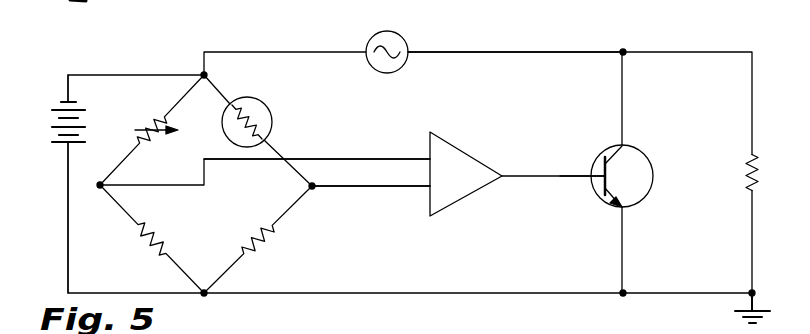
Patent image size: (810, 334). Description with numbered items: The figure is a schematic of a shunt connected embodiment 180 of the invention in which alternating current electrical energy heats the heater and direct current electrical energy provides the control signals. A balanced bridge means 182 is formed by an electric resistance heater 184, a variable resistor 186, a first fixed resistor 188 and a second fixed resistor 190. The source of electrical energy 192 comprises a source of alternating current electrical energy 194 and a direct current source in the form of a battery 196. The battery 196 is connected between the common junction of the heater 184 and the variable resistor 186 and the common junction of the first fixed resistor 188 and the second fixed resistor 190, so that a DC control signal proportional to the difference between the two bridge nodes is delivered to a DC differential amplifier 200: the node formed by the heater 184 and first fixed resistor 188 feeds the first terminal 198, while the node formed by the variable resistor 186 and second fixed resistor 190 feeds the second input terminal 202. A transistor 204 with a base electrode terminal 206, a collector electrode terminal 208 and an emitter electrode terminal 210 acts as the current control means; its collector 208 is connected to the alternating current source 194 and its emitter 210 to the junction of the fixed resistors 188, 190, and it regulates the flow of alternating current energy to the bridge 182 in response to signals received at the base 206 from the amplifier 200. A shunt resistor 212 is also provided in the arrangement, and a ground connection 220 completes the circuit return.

The shunt connected embodiment 180 is at (618, 32).
The balanced bridge means 182 is at (345, 233).
The electric resistance heater 184 is at (229, 100).
The variable resistor 186 is at (152, 130).
The first fixed resistor 188 is at (258, 239).
The second fixed resistor 190 is at (147, 239).
The source of electrical energy 192 is at (369, 38).
The source of alternating current electrical energy 194 is at (400, 38).
The battery 196 is at (52, 184).
The first terminal 198 is at (428, 192).
The DC differential amplifier 200 is at (536, 150).
The second input terminal 202 is at (428, 154).
The transistor 204 is at (618, 147).
The base electrode terminal 206 is at (592, 177).
The collector electrode terminal 208 is at (625, 148).
The emitter electrode terminal 210 is at (626, 205).
The shunt resistor 212 is at (754, 168).
The ground 220 is at (698, 313).